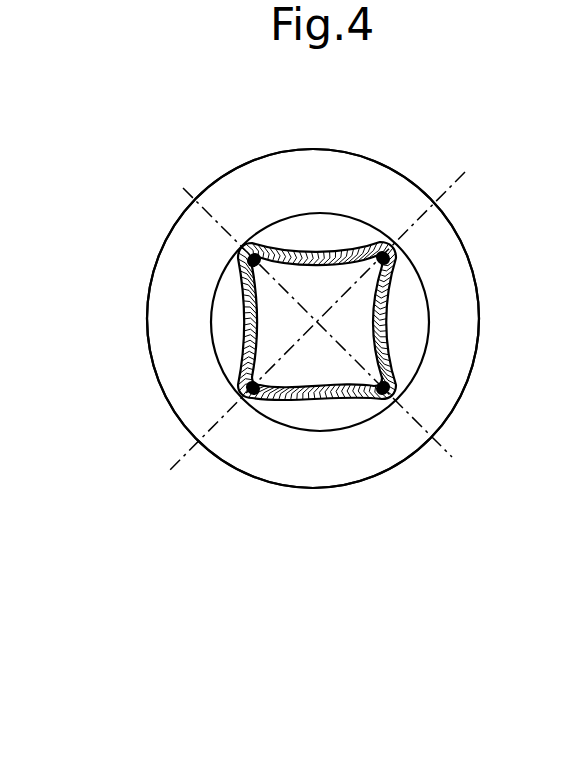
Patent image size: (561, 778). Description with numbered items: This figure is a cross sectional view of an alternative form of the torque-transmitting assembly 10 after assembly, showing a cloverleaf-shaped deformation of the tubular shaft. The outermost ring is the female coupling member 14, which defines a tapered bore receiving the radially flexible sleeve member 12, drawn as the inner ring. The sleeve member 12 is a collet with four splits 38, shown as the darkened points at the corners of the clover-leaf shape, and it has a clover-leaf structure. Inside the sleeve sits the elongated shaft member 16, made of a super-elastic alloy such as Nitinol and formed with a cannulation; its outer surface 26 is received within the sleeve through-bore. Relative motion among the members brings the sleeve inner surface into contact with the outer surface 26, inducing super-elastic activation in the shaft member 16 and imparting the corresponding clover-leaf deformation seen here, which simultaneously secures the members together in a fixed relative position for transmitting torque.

The torque-transmitting assembly 10 is at (279, 517).
The radially flexible sleeve member 12 is at (371, 238).
The female coupling member 14 is at (260, 189).
The elongated shaft member 16 is at (247, 352).
The outer surface 26 is at (247, 292).
The splits 38 is at (250, 259).